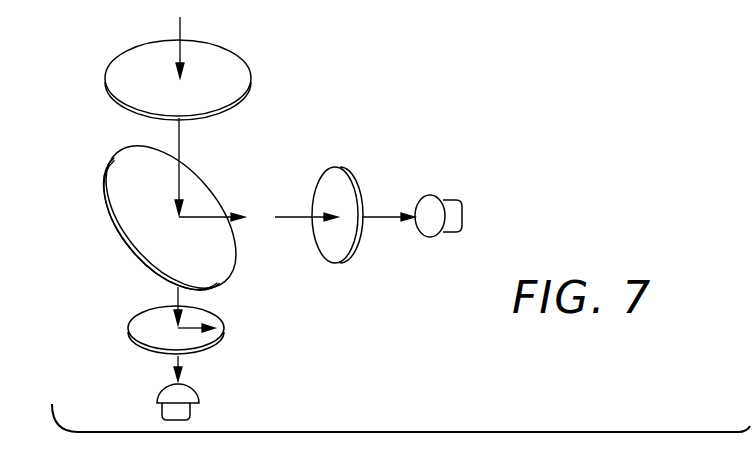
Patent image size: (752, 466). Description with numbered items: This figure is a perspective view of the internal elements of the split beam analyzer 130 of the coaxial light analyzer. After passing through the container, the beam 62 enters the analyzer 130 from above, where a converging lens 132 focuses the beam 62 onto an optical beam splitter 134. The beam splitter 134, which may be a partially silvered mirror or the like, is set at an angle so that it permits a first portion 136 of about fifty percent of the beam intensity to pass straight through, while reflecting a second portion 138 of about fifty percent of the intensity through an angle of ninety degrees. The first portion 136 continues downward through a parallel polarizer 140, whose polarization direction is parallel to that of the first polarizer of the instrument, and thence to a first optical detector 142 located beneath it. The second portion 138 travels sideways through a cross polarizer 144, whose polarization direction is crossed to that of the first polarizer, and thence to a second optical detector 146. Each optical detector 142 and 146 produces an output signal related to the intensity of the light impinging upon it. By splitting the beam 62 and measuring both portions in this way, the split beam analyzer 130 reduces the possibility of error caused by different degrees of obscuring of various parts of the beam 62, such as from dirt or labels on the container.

The beam 62 is at (183, 26).
The split beam analyzer 130 is at (84, 139).
The converging lens 132 is at (130, 50).
The optical beam splitter 134 is at (121, 216).
The first portion 136 is at (178, 292).
The second portion 138 is at (297, 217).
The parallel polarizer 140 is at (128, 337).
The first optical detector 142 is at (160, 394).
The cross polarizer 144 is at (337, 263).
The second optical detector 146 is at (436, 235).